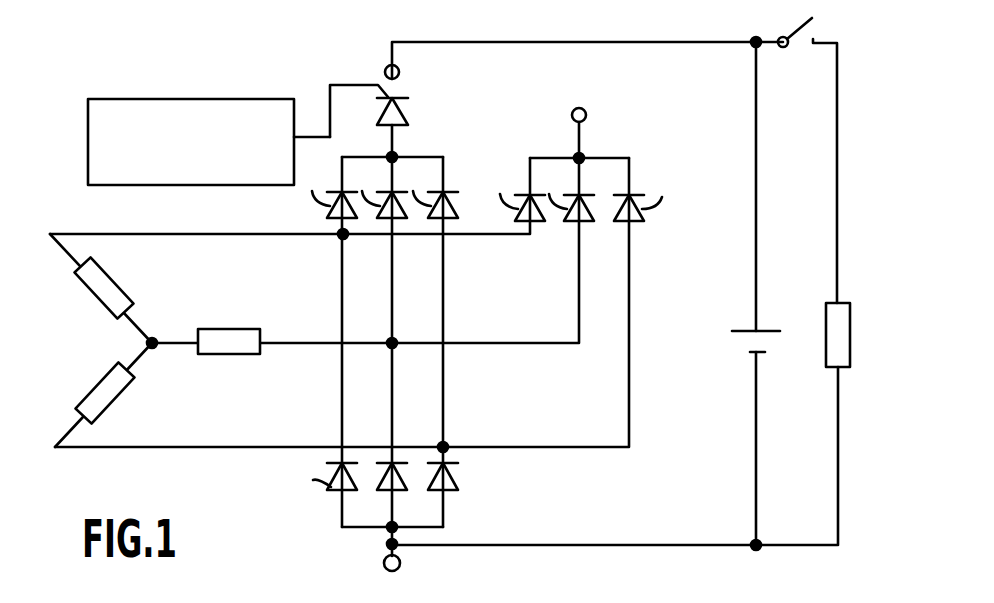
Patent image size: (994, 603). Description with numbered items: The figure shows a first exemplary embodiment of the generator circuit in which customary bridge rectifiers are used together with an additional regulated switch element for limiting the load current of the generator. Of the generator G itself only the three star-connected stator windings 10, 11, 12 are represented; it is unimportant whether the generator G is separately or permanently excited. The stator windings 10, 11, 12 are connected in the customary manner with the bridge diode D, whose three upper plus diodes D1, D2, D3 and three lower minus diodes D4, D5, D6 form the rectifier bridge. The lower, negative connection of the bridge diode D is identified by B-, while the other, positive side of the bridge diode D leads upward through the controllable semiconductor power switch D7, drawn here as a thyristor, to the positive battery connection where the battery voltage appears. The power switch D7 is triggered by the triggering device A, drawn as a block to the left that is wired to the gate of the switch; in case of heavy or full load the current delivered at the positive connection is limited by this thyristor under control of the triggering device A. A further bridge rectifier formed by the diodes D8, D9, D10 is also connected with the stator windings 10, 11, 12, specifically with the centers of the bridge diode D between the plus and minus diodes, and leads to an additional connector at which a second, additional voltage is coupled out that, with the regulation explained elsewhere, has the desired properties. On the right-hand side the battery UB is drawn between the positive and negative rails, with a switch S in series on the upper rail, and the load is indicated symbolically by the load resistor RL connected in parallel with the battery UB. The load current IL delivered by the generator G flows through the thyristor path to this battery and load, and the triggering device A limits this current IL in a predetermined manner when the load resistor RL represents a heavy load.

The triggering device A is at (157, 110).
The stator winding 10 is at (232, 338).
The stator winding 11 is at (118, 290).
The stator winding 12 is at (103, 383).
The generator G is at (246, 340).
The bridge diode D is at (461, 401).
The plus diode D1 is at (332, 195).
The plus diode D2 is at (380, 250).
The plus diode D3 is at (430, 302).
The minus diode D4 is at (328, 380).
The minus diode D5 is at (399, 487).
The minus diode D6 is at (452, 486).
The controllable semiconductor power switch D7 is at (407, 113).
The diode of further bridge diode D8 is at (444, 196).
The diode of further bridge diode D9 is at (493, 250).
The diode of further bridge diode D10 is at (559, 302).
The load resistor RL is at (843, 354).
The negative connection B- is at (414, 572).
The load current IL is at (371, 91).
The battery UB is at (756, 293).
The switch S is at (807, 160).